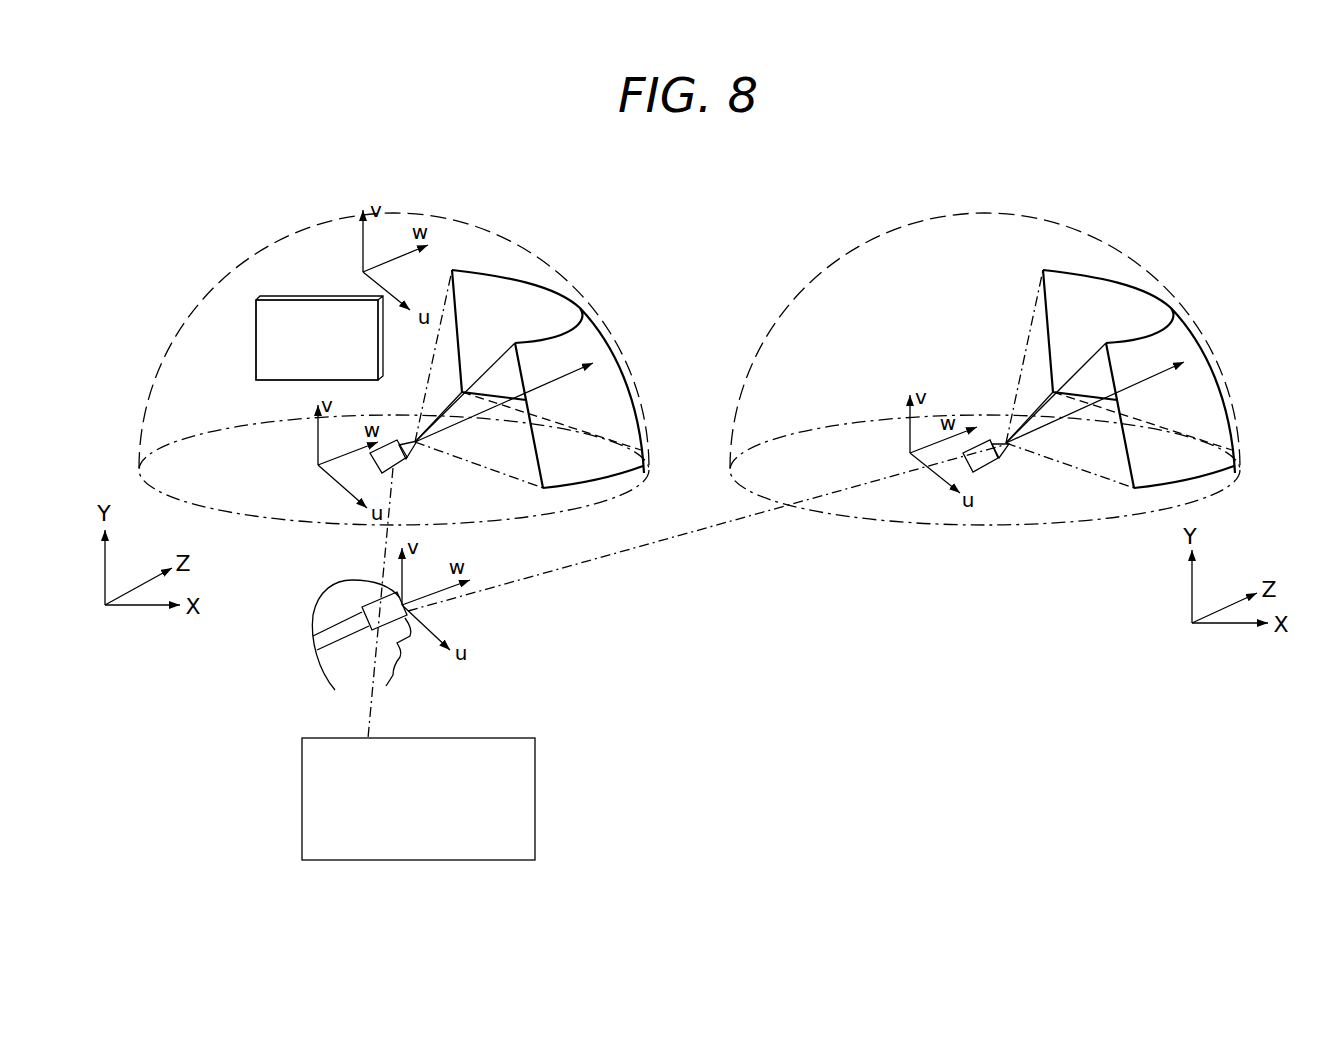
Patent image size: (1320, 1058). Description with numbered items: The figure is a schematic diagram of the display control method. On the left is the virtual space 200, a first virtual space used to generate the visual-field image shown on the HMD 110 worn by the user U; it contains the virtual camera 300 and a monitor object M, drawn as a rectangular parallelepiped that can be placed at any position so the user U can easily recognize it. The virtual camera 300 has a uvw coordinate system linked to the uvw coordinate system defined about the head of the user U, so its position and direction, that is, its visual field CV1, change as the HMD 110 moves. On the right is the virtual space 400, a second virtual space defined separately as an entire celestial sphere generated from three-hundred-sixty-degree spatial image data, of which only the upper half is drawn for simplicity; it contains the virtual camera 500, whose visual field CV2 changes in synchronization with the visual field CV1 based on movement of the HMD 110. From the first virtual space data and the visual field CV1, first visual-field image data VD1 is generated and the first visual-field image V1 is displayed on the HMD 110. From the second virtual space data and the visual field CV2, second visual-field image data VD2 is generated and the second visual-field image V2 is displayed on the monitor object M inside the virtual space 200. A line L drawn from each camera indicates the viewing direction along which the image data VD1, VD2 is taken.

The virtual space 200 is at (324, 232).
The virtual space 400 is at (879, 246).
The virtual camera 300 is at (413, 456).
The virtual camera 500 is at (993, 463).
The HMD 110 is at (368, 604).
The monitor object M is at (303, 300).
The first visual-field image V1 is at (495, 745).
The second visual-field image V2 is at (277, 333).
The first visual-field image data VD1 is at (508, 302).
The second visual-field image data VD2 is at (1113, 302).
The line of sight L is at (560, 377).
The visual field CV1 is at (502, 455).
The visual field CV2 is at (1083, 447).
The user U is at (330, 650).